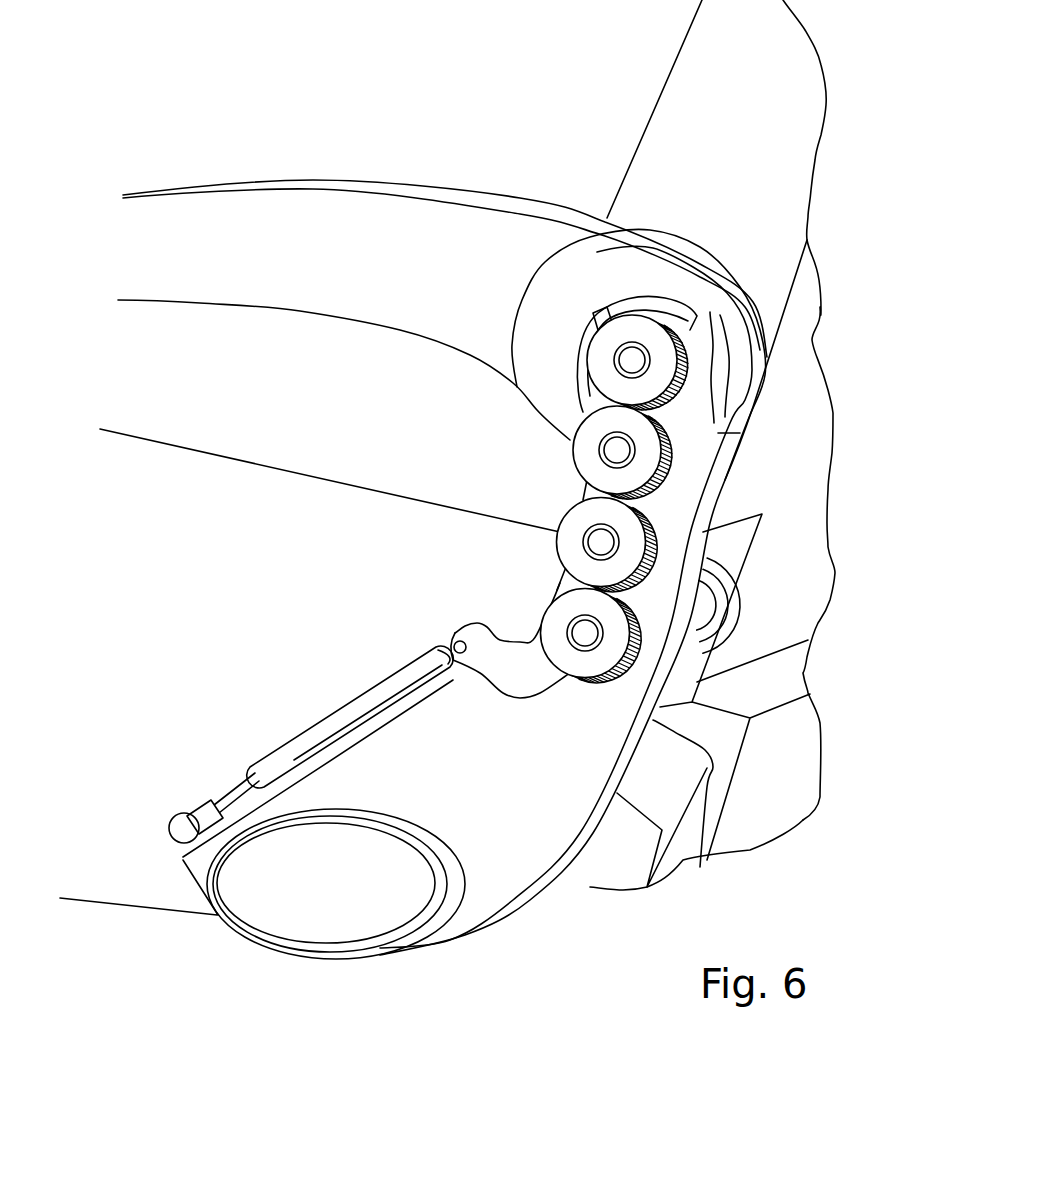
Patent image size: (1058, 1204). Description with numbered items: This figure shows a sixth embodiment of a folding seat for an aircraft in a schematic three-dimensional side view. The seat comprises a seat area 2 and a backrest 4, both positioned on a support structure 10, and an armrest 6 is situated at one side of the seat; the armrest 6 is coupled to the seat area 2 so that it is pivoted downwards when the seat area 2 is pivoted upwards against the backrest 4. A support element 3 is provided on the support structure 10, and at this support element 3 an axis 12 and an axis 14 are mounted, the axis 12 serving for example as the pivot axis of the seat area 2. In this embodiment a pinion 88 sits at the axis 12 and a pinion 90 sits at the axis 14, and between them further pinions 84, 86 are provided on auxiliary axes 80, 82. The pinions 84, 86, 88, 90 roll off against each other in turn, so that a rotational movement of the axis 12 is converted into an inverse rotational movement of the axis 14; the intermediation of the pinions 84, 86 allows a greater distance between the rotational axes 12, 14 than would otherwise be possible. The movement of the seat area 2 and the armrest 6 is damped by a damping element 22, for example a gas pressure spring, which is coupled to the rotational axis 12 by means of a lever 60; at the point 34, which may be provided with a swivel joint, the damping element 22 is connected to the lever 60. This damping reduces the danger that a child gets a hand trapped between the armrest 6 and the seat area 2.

The seat area 2 is at (180, 460).
The support element 3 is at (517, 905).
The backrest 4 is at (653, 107).
The armrest 6 is at (317, 192).
The support structure 10 is at (350, 952).
The axis 12 is at (585, 633).
The axis 14 is at (632, 360).
The damping element 22 is at (330, 722).
The point 34 is at (453, 637).
The lever 60 is at (517, 687).
The auxiliary axis 80 is at (601, 542).
The auxiliary axis 82 is at (617, 450).
The pinion 84 is at (575, 522).
The pinion 86 is at (583, 461).
The pinion 88 is at (583, 680).
The pinion 90 is at (602, 343).